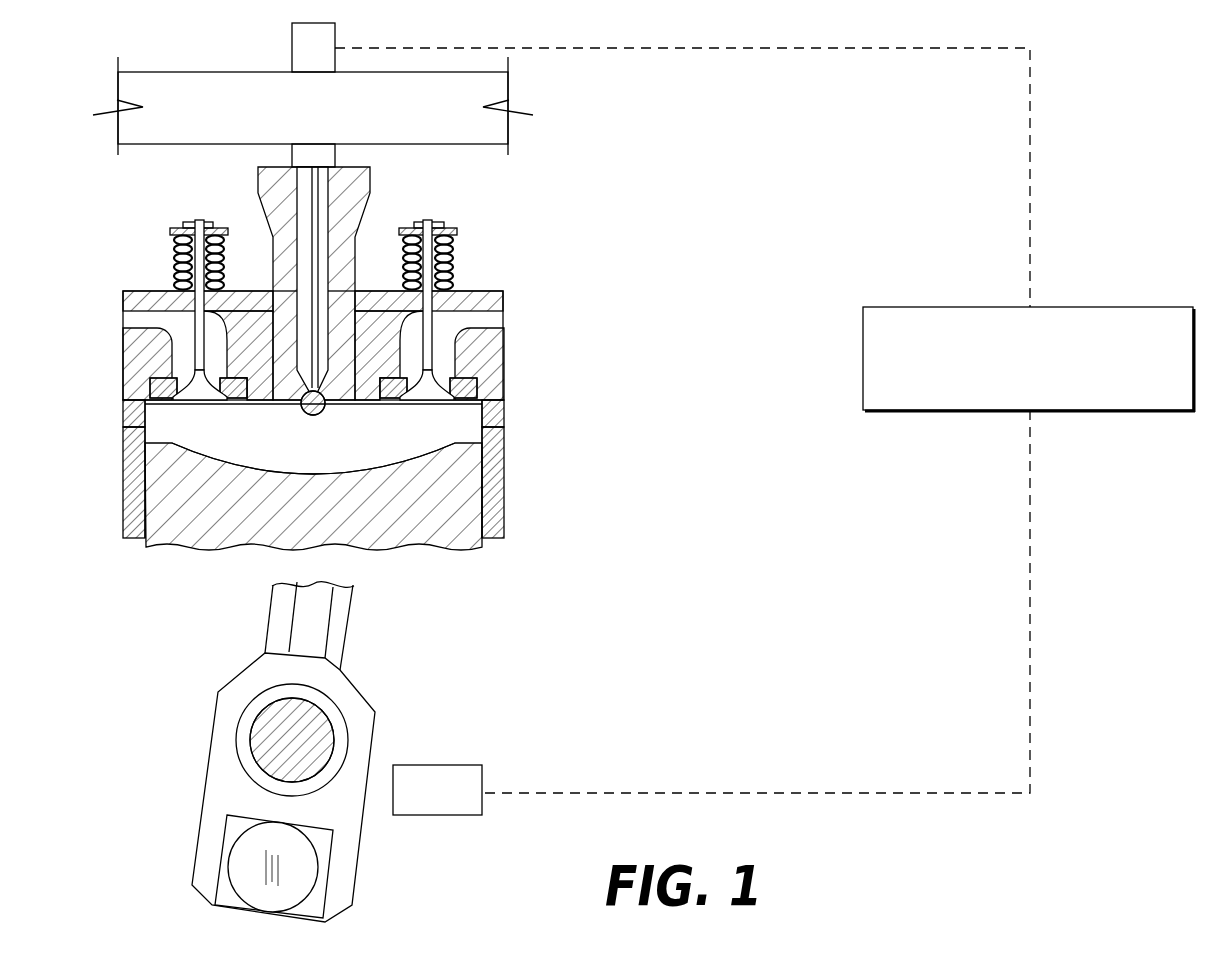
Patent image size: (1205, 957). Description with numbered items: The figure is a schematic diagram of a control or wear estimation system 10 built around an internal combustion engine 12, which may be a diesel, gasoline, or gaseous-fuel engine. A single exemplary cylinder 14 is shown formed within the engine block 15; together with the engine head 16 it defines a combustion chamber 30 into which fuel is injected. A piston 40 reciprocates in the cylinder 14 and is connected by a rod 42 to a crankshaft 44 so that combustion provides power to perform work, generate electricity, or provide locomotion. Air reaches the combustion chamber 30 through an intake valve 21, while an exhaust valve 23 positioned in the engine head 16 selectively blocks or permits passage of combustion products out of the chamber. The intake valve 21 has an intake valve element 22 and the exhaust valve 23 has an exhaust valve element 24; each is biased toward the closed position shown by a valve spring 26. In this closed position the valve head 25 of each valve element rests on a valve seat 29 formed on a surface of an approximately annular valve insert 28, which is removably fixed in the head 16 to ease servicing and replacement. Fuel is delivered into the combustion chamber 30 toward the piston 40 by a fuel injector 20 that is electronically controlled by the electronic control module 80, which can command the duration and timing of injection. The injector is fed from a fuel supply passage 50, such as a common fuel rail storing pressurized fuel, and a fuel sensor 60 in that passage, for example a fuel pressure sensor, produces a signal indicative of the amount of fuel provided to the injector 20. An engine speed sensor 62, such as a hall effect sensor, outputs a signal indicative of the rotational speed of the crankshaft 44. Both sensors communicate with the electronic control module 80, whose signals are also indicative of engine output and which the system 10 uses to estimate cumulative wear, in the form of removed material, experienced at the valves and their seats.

The wear estimation system 10 is at (1085, 158).
The internal combustion engine 12 is at (94, 202).
The cylinder 14 is at (124, 427).
The engine block 15 is at (132, 498).
The engine head 16 is at (130, 352).
The fuel injector 20 is at (263, 183).
The intake valve 21 is at (475, 262).
The intake valve element 22 is at (427, 223).
The exhaust valve 23 is at (152, 260).
The exhaust valve element 24 is at (197, 223).
The valve head 25 is at (184, 405).
The valve spring 26 is at (223, 267).
The valve insert 28 is at (243, 405).
The valve seat 29 is at (122, 407).
The combustion chamber 30 is at (437, 447).
The piston 40 is at (473, 518).
The rod 42 is at (282, 607).
The crankshaft 44 is at (222, 748).
The fuel supply passage 50 is at (183, 77).
The fuel sensor 60 is at (300, 33).
The engine speed sensor 62 is at (437, 772).
The electronic control module 80 is at (1029, 359).